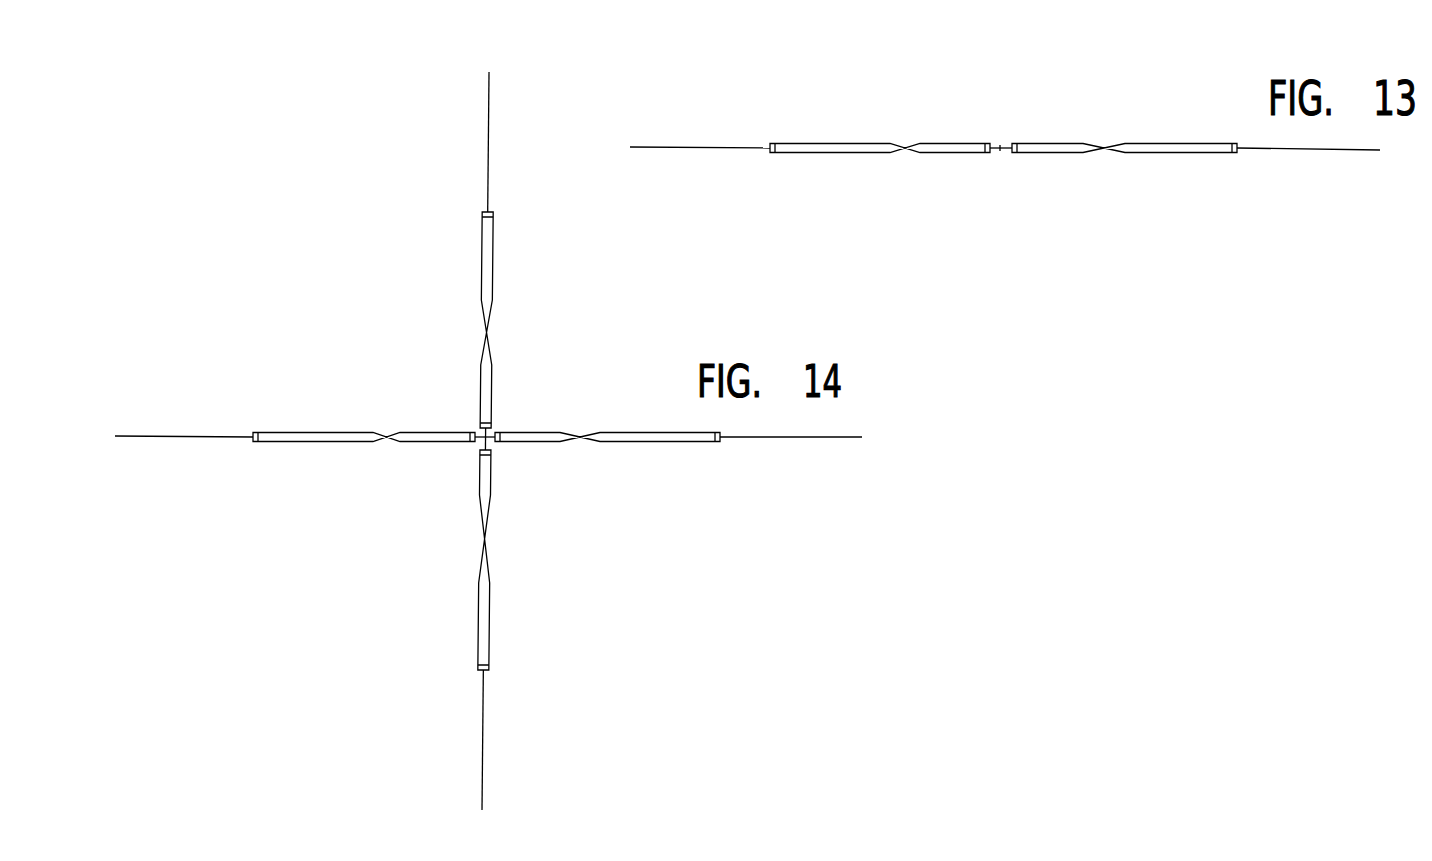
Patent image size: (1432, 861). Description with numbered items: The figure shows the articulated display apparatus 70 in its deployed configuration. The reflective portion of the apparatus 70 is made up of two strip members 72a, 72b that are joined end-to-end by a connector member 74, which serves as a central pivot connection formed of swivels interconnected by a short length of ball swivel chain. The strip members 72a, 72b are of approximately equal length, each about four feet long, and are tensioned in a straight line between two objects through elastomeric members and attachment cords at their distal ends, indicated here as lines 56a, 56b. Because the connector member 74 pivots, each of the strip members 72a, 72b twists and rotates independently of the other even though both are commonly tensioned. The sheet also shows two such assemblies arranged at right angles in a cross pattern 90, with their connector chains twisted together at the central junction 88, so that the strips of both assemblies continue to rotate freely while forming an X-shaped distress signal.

In FIG. 13, the apparatus 70 is at (925, 70).
In FIG. 14, the apparatus 70 is at (365, 400).
In FIG. 13, the strip member 72a is at (1065, 140).
In FIG. 14, the strip member 72a is at (633, 448).
In FIG. 13, the strip member 72b is at (852, 140).
In FIG. 14, the strip member 72b is at (325, 445).
In FIG. 13, the connector member 74 is at (1003, 158).
In FIG. 13, the first transmission line 56a is at (1305, 153).
In FIG. 13, the second transmission line 56b is at (692, 146).
In FIG. 14, the crossed dipole antenna arrangement 90 is at (328, 243).
In FIG. 14, the central feed junction 88 is at (503, 420).